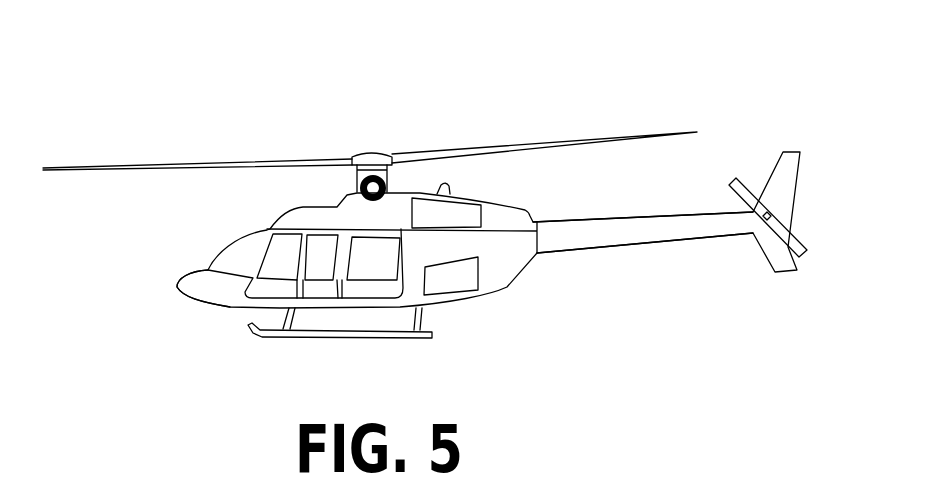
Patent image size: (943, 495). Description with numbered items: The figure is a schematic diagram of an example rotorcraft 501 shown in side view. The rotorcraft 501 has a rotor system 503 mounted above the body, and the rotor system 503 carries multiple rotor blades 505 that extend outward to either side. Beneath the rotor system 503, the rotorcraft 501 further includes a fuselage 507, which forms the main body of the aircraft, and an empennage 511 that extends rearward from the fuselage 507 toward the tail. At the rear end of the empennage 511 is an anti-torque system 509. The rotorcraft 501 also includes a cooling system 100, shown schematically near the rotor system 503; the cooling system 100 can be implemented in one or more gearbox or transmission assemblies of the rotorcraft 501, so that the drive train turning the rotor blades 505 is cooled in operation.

The rotorcraft 501 is at (466, 204).
The rotor system 503 is at (387, 121).
The rotor blades 505 is at (637, 137).
The cooling system 100 is at (395, 180).
The fuselage 507 is at (237, 308).
The anti-torque system 509 is at (808, 276).
The empennage 511 is at (622, 247).